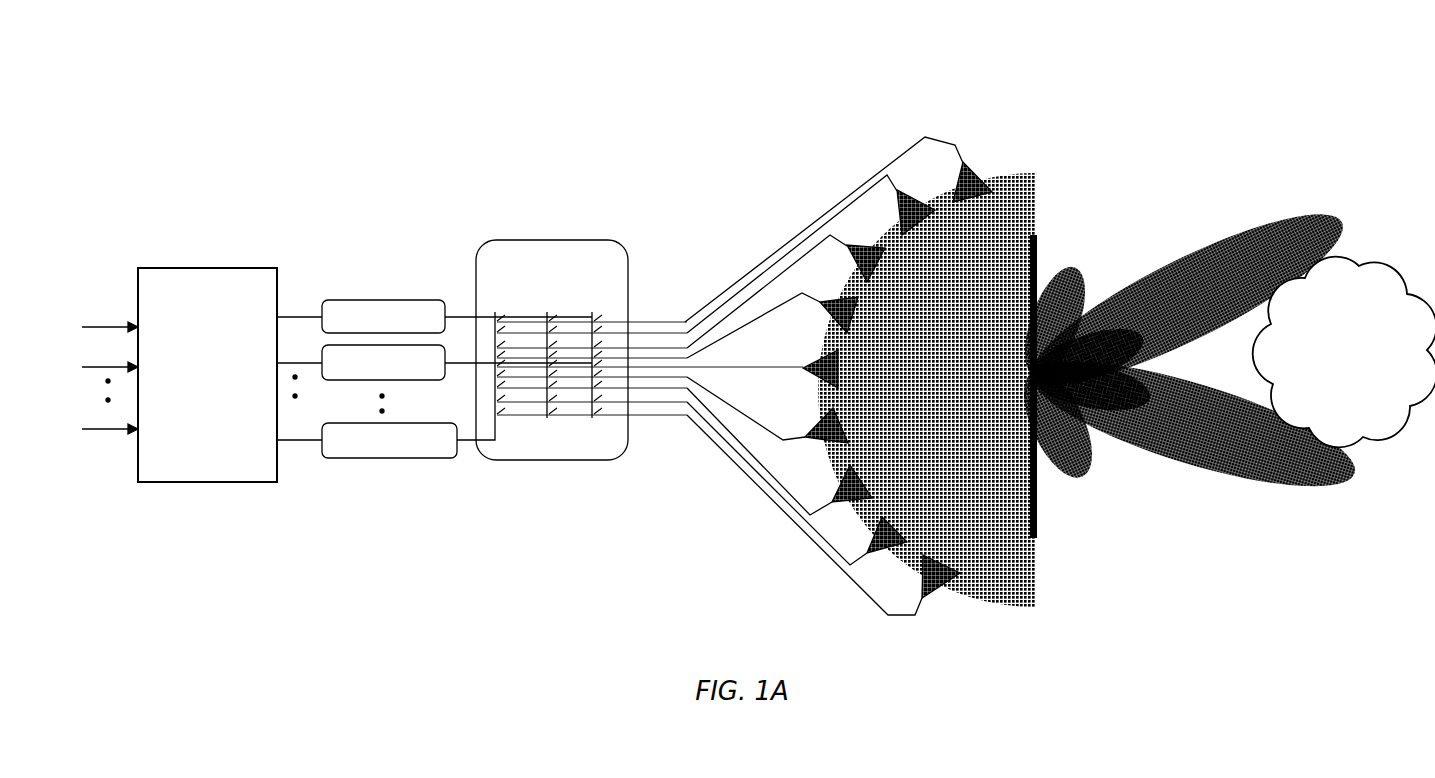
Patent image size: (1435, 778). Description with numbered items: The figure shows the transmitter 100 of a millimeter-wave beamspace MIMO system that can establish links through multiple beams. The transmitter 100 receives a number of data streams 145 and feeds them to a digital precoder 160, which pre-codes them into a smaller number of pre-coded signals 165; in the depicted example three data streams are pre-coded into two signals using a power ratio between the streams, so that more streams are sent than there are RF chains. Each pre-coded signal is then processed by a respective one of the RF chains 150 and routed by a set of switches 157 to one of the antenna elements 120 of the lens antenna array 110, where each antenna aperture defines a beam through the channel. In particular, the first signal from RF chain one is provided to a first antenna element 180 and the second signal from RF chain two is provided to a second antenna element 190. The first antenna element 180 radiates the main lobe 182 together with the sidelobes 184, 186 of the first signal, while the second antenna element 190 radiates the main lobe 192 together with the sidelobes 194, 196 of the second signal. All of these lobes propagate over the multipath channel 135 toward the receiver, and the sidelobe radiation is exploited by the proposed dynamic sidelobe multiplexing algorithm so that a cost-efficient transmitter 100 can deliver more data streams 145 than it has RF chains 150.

The transmitter 100 is at (250, 95).
The data streams 145 is at (88, 522).
The digital precoder 160 is at (207, 375).
The pre-coded signals 165 is at (310, 284).
The RF chains 150 is at (394, 298).
The switches 157 is at (639, 350).
The antenna elements 120 is at (900, 96).
The first antenna element 180 is at (853, 306).
The second antenna element 190 is at (848, 426).
The lens antenna array 110 is at (927, 390).
The main lobe 192 is at (1188, 298).
The main lobe 182 is at (1194, 424).
The sidelobe 194 is at (1055, 321).
The sidelobe 186 is at (1058, 423).
The sidelobe 184 is at (1088, 356).
The sidelobe 196 is at (1091, 386).
The multipath channel 135 is at (1344, 352).